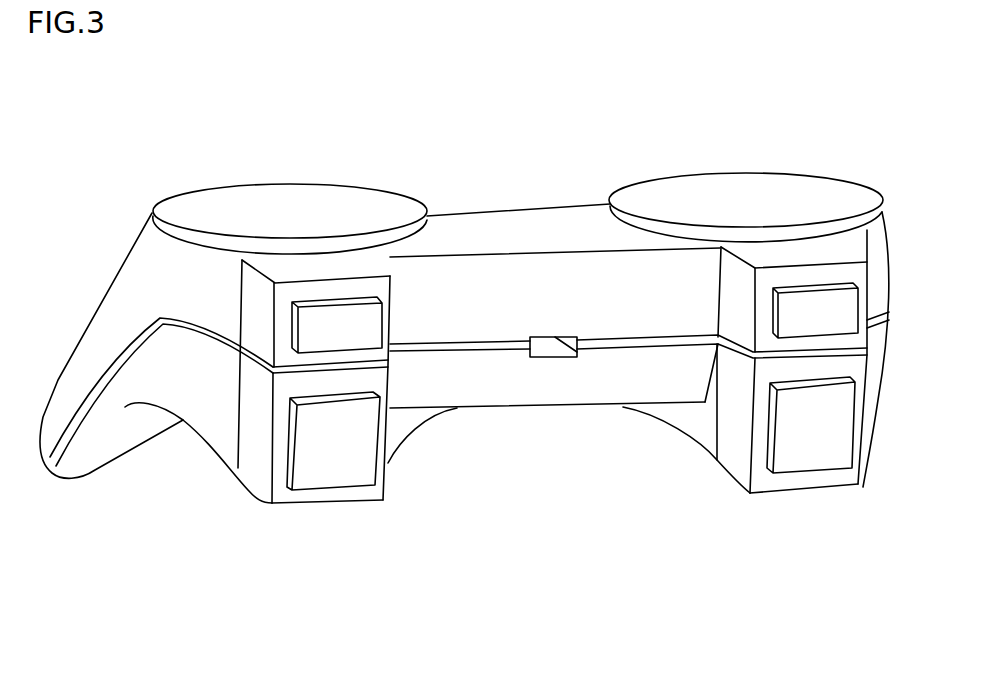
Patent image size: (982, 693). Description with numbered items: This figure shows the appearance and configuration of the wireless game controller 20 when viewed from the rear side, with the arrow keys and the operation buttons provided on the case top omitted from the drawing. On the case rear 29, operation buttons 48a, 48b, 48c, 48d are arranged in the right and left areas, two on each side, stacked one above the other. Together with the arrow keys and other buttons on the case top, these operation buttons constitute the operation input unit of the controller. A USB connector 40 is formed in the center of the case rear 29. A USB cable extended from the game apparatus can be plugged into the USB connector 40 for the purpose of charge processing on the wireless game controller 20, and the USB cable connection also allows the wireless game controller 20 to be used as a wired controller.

The wireless game controller 20 is at (464, 369).
The case rear 29 is at (667, 288).
The USB connector 40 is at (542, 348).
The operation button 48a is at (342, 318).
The operation button 48b is at (820, 300).
The operation button 48c is at (336, 465).
The operation button 48d is at (815, 450).